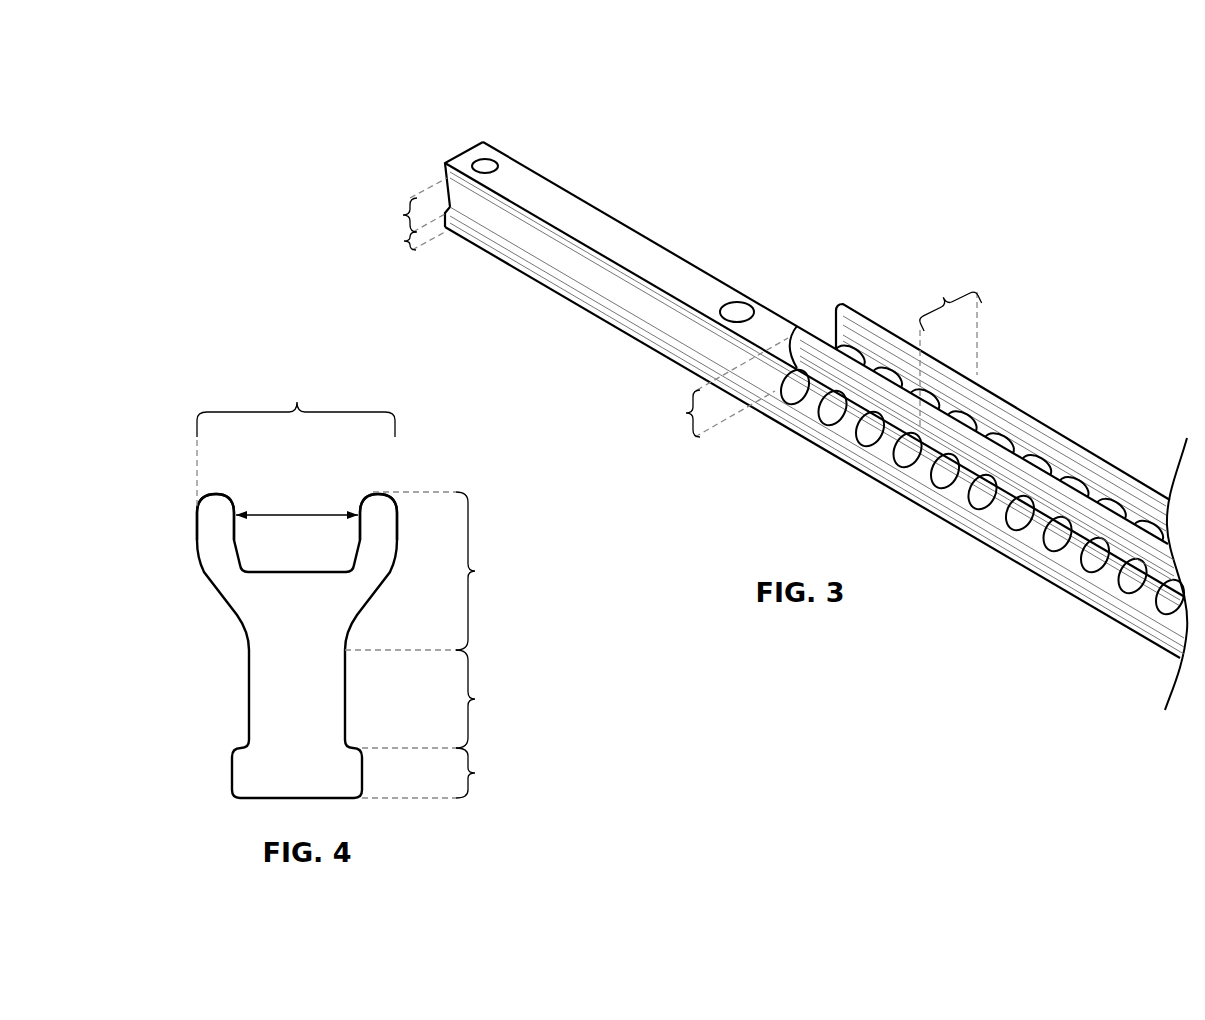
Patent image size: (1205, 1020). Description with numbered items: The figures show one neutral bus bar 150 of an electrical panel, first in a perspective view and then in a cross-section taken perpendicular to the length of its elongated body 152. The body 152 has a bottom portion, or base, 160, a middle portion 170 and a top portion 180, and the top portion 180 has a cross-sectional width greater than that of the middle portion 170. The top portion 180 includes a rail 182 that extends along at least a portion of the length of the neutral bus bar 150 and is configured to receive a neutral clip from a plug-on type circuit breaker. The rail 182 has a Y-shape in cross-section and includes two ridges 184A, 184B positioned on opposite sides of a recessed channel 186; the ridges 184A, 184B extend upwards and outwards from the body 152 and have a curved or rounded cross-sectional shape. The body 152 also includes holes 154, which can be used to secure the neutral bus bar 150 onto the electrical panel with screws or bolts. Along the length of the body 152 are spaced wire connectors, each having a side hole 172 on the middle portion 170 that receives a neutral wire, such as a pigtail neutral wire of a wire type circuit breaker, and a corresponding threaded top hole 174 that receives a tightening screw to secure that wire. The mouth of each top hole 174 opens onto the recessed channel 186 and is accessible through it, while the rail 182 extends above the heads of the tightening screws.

In FIG. 3, the neutral bus bar 150 is at (768, 391).
In FIG. 4, the neutral bus bar 150 is at (281, 584).
In FIG. 3, the body 152 is at (1042, 410).
In FIG. 4, the body 152 is at (257, 676).
In FIG. 3, the holes 154 is at (488, 157).
In FIG. 3, the bottom portion 160 is at (407, 241).
In FIG. 4, the bottom portion 160 is at (438, 773).
In FIG. 3, the middle portion 170 is at (404, 215).
In FIG. 4, the middle portion 170 is at (443, 699).
In FIG. 3, the side hole 172 is at (1050, 547).
In FIG. 3, the top hole 174 is at (1138, 508).
In FIG. 3, the top portion 180 is at (713, 387).
In FIG. 4, the top portion 180 is at (436, 571).
In FIG. 3, the rail 182 is at (947, 347).
In FIG. 4, the rail 182 is at (296, 440).
In FIG. 3, the ridge 184A is at (791, 335).
In FIG. 4, the ridge 184A is at (220, 512).
In FIG. 3, the ridge 184B is at (842, 308).
In FIG. 4, the ridge 184B is at (372, 512).
In FIG. 3, the recessed channel 186 is at (826, 324).
In FIG. 4, the recessed channel 186 is at (283, 512).